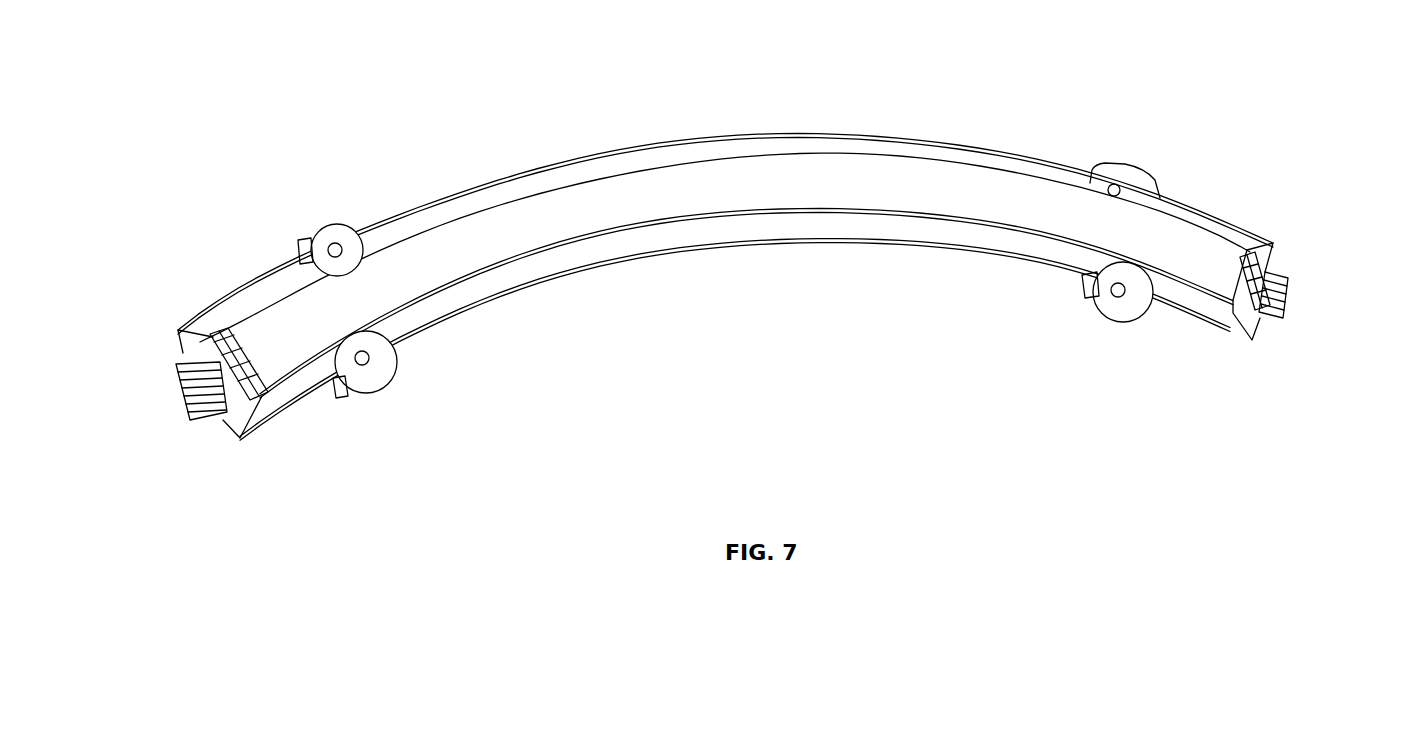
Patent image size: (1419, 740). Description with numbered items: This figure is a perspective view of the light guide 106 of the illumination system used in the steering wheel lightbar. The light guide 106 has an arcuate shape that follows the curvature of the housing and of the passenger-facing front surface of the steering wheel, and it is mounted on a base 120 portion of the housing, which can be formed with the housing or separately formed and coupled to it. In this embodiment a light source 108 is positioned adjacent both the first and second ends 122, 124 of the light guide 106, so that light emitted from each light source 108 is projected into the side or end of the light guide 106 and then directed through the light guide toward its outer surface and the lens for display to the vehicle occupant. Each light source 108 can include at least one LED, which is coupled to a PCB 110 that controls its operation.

The light guide 106 is at (787, 183).
The light source 108 is at (208, 345).
The PCB 110 is at (220, 367).
The base 120 is at (600, 163).
The first end 122 is at (220, 340).
The second end 124 is at (1240, 263).